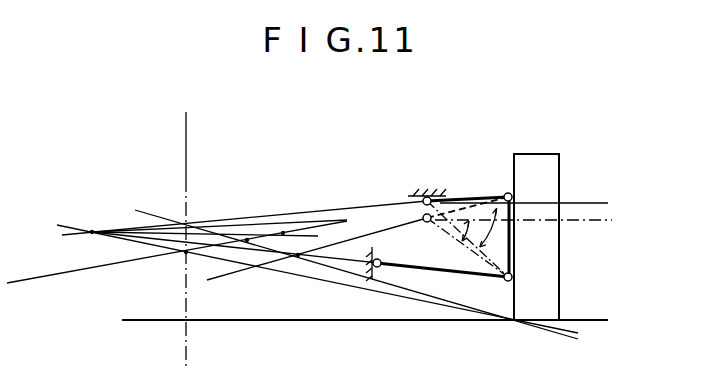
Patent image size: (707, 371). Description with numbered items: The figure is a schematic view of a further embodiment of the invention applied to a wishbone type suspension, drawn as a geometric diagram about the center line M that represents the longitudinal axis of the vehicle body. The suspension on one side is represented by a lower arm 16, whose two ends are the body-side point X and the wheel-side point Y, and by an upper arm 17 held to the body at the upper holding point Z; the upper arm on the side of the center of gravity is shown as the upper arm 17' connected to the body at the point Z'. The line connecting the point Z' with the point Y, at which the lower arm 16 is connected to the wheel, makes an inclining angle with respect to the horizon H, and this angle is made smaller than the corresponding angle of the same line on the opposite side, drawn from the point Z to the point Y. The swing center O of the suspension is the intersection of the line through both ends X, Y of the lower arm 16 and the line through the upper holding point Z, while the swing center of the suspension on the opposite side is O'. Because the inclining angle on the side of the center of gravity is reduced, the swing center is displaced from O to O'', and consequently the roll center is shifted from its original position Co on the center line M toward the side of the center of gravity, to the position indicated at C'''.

The lower arm 16 is at (444, 276).
The upper arm 17 is at (468, 220).
The upper arm on the side of the center of gravity 17' is at (467, 182).
The center line M is at (186, 228).
The horizon H is at (594, 202).
The swing center O is at (88, 207).
The roll center Co is at (182, 254).
The shifted roll center C''' is at (257, 209).
The swing center of the suspension on the opposite side O' is at (302, 206).
The shifted swing center O'' is at (292, 282).
The upper holding point Z is at (422, 184).
The connection point of the upper arm to the body Z' is at (414, 237).
The body-side end of the lower arm X is at (380, 268).
The wheel-side end of the lower arm Y is at (513, 276).